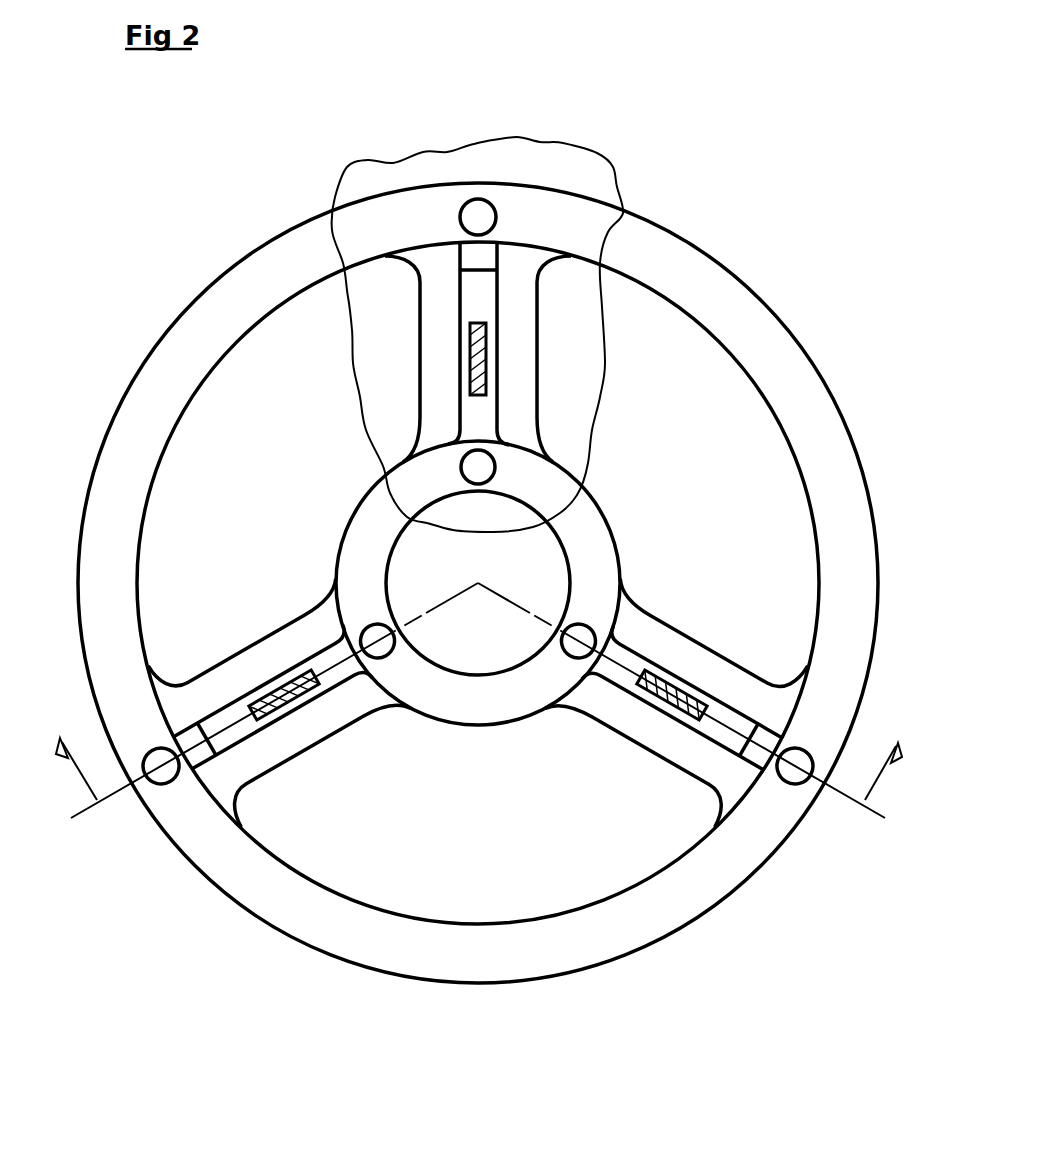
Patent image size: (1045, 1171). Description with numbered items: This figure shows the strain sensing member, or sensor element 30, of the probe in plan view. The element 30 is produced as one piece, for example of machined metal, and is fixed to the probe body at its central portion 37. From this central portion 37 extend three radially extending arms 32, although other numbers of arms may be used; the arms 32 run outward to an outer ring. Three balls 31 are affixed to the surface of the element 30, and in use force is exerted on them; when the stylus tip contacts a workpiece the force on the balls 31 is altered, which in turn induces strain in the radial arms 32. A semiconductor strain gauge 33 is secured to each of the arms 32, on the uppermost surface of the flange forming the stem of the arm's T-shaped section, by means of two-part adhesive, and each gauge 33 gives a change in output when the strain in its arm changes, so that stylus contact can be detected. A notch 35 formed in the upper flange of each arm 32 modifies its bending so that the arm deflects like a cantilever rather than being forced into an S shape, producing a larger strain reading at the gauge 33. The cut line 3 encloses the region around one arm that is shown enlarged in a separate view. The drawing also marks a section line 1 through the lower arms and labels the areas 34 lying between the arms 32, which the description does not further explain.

The section line I-I 1 is at (487, 700).
The cut line 3 is at (617, 160).
The sensor element 30 is at (838, 337).
The balls 31 is at (477, 213).
The radially extending arms 32 is at (477, 405).
The semiconductor strain gauge 33 is at (487, 358).
The pockets 34 is at (432, 348).
The notch 35 is at (473, 258).
The central portion 37 is at (445, 712).